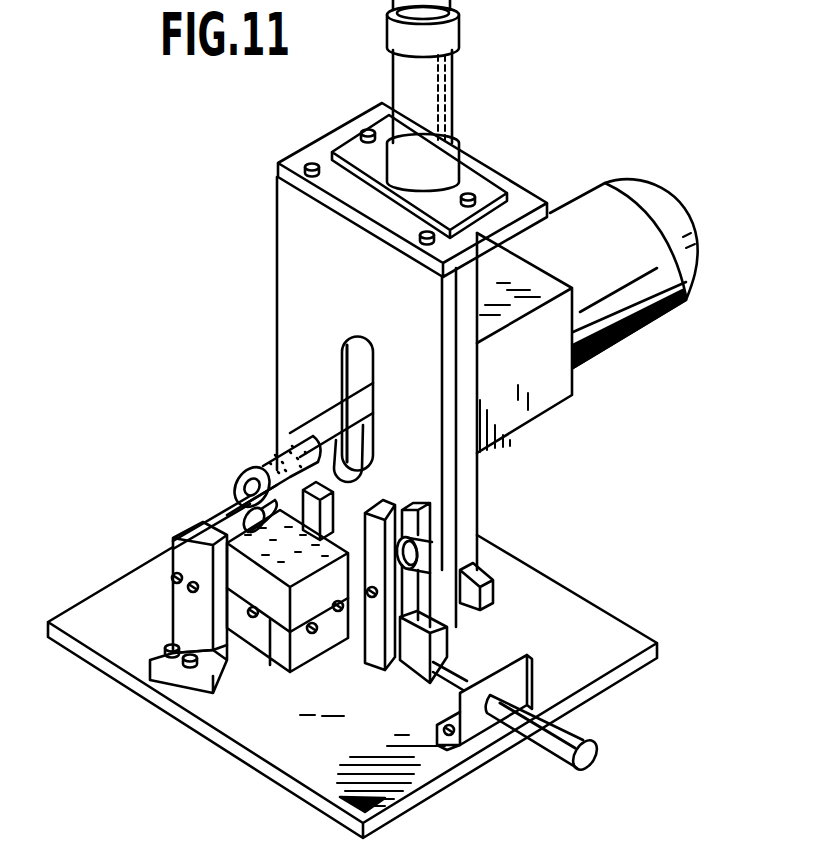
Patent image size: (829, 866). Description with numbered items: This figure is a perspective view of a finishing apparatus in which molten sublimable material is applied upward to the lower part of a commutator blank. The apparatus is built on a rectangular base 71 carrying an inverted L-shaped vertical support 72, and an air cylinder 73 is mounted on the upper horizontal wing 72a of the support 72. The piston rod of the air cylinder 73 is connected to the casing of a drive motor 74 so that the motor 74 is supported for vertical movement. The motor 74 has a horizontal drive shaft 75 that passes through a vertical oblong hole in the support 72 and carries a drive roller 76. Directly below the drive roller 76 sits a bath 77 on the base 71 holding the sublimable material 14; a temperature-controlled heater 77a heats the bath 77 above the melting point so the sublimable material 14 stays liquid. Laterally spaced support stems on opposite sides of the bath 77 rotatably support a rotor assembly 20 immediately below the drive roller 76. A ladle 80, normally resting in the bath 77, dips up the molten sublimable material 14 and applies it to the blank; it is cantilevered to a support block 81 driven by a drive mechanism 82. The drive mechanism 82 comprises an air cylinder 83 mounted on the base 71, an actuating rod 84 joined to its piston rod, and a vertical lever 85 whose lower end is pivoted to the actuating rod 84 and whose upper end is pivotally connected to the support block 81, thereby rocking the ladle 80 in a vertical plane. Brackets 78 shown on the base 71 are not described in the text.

The sublimable material 14 is at (230, 527).
The rotor assembly 20 is at (223, 494).
The rectangular base 71 is at (627, 643).
The vertical support 72 is at (297, 270).
The upper horizontal wing 72a is at (317, 137).
The air cylinder 73 is at (430, 113).
The drive motor 74 is at (690, 293).
The drive shaft 75 is at (300, 440).
The drive roller 76 is at (265, 450).
The bath 77 is at (333, 615).
The temperature-controlled heater 77a is at (282, 662).
The bracket 78 is at (320, 460).
The ladle 80 is at (353, 465).
The support block 81 is at (370, 498).
The drive mechanism 82 is at (413, 687).
The air cylinder 83 is at (595, 758).
The actuating rod 84 is at (432, 650).
The vertical lever 85 is at (377, 662).